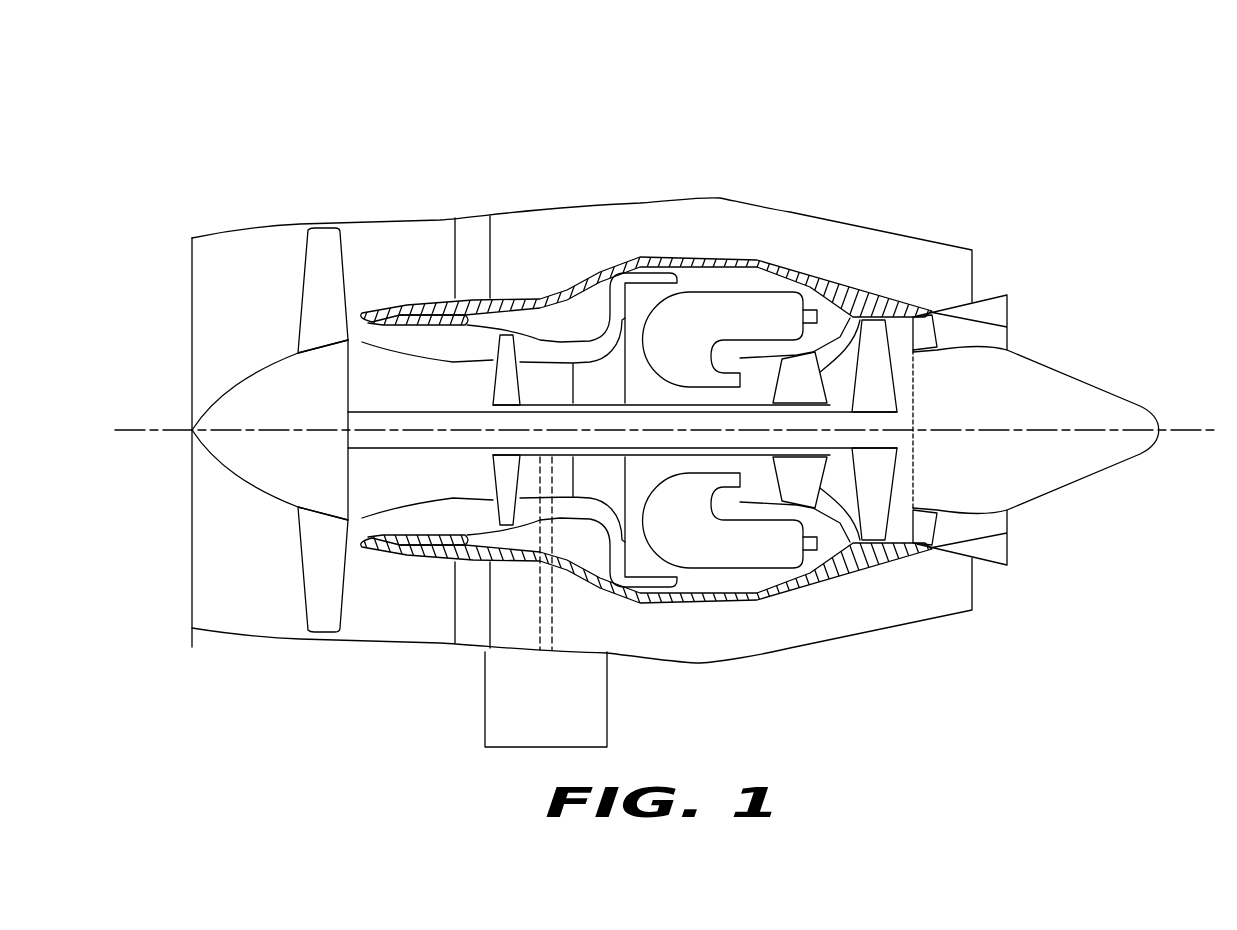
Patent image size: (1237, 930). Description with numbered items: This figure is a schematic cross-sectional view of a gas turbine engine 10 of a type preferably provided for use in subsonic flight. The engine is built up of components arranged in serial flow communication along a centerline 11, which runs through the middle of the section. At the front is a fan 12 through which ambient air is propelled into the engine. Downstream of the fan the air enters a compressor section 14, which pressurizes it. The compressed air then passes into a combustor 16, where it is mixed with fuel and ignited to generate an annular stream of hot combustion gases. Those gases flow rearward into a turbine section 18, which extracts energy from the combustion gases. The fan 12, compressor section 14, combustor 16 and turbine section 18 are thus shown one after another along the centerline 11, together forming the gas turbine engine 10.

The gas turbine engine 10 is at (870, 137).
The centerline 11 is at (1198, 428).
The fan 12 is at (320, 565).
The compressor section 14 is at (558, 352).
The combustor 16 is at (712, 317).
The turbine section 18 is at (835, 473).